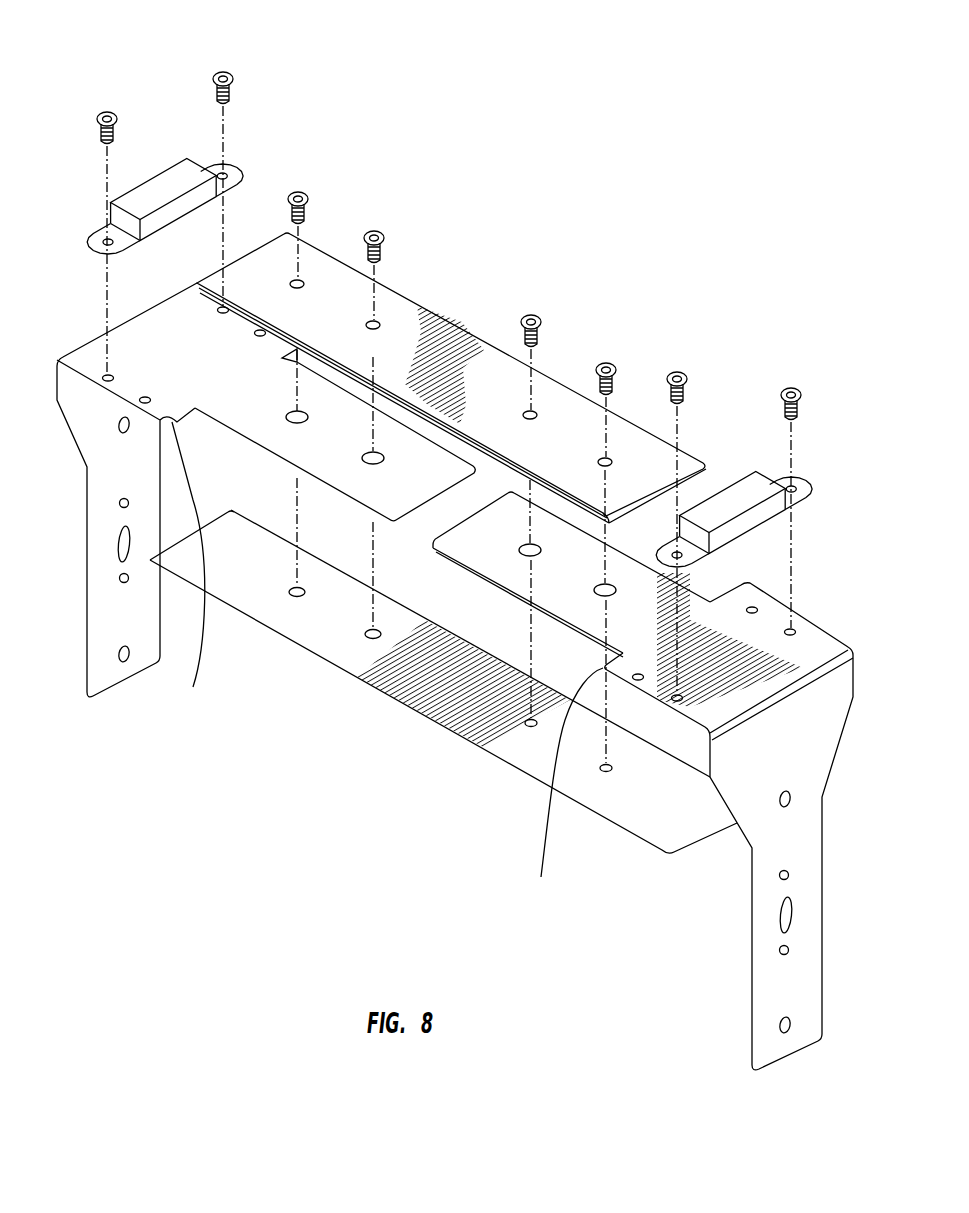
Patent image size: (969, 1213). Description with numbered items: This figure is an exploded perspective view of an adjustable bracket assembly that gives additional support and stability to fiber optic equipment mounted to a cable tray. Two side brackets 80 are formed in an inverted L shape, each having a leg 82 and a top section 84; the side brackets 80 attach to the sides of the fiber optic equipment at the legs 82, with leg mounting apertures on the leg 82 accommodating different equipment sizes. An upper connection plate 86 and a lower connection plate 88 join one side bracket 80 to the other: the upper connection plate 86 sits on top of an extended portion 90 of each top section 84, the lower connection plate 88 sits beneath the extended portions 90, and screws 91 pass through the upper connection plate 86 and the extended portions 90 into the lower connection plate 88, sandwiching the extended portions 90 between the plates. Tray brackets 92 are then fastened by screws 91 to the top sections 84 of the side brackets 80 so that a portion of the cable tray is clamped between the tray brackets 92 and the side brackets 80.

The side bracket 80 is at (87, 622).
The leg 82 is at (86, 536).
The top section 84 is at (387, 661).
The upper connection plate 86 is at (467, 443).
The lower connection plate 88 is at (538, 783).
The extended portion 90 is at (261, 452).
The screw 91 is at (226, 72).
The tray bracket 92 is at (163, 180).